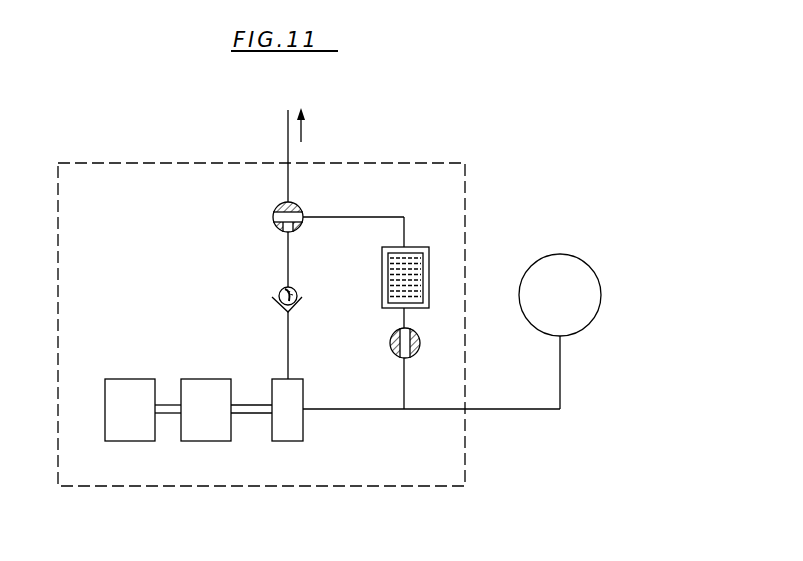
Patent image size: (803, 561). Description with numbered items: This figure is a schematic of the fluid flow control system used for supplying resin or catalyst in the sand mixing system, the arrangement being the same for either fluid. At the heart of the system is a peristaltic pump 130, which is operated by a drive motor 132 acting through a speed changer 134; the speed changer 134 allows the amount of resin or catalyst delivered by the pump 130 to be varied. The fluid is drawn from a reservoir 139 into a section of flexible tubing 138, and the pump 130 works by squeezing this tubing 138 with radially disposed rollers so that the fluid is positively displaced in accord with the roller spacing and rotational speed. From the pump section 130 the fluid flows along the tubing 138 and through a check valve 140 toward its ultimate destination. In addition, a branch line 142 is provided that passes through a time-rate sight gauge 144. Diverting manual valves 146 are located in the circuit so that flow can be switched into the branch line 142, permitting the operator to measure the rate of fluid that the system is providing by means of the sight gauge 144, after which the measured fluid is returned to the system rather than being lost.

The peristaltic pump 130 is at (289, 432).
The drive motor 132 is at (130, 382).
The speed changer 134 is at (208, 428).
The flexible tubing 138 is at (352, 411).
The reservoir 139 is at (587, 283).
The check valve 140 is at (297, 302).
The branch line 142 is at (390, 206).
The time-rate sight gauge 144 is at (385, 278).
The diverting manual valve 146 is at (276, 225).